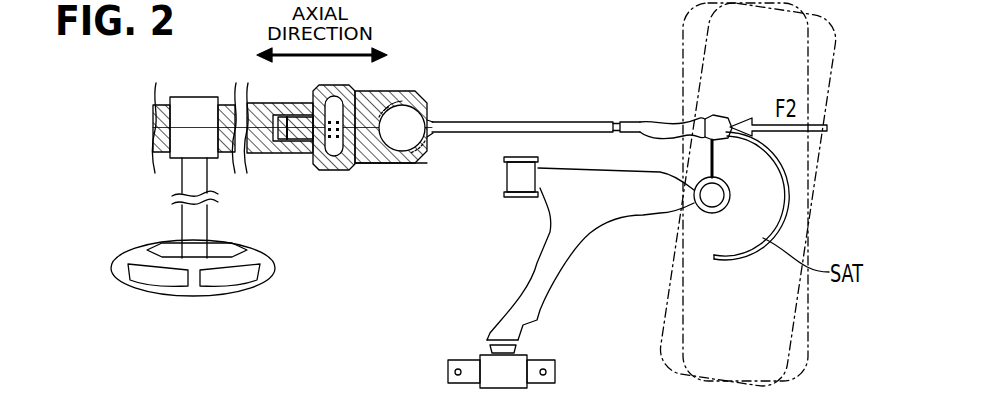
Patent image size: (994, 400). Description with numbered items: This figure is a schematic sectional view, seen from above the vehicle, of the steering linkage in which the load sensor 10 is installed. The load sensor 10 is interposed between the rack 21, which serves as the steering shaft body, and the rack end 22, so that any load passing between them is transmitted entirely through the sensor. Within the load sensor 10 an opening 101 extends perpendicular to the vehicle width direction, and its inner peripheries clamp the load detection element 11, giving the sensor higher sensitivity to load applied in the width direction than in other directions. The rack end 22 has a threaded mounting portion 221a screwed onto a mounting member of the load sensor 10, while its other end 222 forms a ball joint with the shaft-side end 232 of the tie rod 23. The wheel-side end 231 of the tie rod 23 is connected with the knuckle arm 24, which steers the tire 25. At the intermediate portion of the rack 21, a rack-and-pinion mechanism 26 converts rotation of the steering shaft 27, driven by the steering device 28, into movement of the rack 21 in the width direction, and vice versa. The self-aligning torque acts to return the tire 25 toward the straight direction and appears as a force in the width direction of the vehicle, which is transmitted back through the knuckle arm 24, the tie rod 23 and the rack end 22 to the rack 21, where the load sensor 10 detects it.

The load sensor 10 is at (328, 170).
The opening 101 is at (337, 170).
The load detection element 11 is at (312, 100).
The rack 21 is at (289, 153).
The rack end 22 is at (392, 165).
The mounting portion 221a is at (371, 163).
The other end of the rack end 222 is at (430, 142).
The tie rod 23 is at (641, 120).
The other end of the tie rod 231 is at (715, 118).
The one end of the tie rod 232 is at (423, 168).
The knuckle arm 24 is at (716, 157).
The tire 25 is at (752, 312).
The rack-and-pinion mechanism 26 is at (196, 110).
The steering shaft 27 is at (185, 220).
The steering device 28 is at (272, 268).